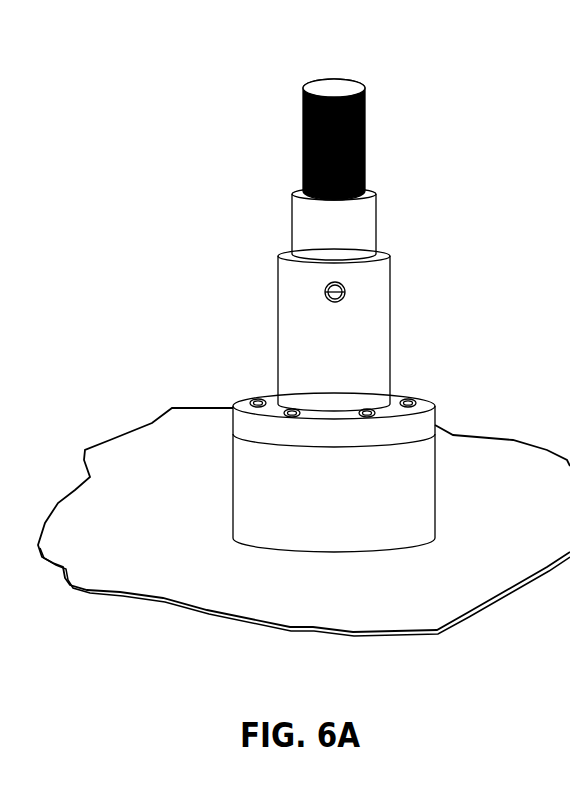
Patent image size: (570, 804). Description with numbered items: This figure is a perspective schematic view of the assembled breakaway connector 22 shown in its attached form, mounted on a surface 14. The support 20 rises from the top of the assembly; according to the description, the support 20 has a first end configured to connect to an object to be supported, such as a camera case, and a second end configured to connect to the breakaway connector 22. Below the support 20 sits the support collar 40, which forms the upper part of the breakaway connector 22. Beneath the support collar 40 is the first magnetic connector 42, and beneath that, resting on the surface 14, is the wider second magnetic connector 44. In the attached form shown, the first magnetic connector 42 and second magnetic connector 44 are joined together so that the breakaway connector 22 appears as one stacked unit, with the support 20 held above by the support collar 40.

The mounting plate 14 is at (178, 433).
The support 20 is at (347, 117).
The breakaway connector 22 is at (222, 258).
The support collar 40 is at (362, 218).
The first magnetic connector 42 is at (370, 315).
The second magnetic connector 44 is at (410, 483).